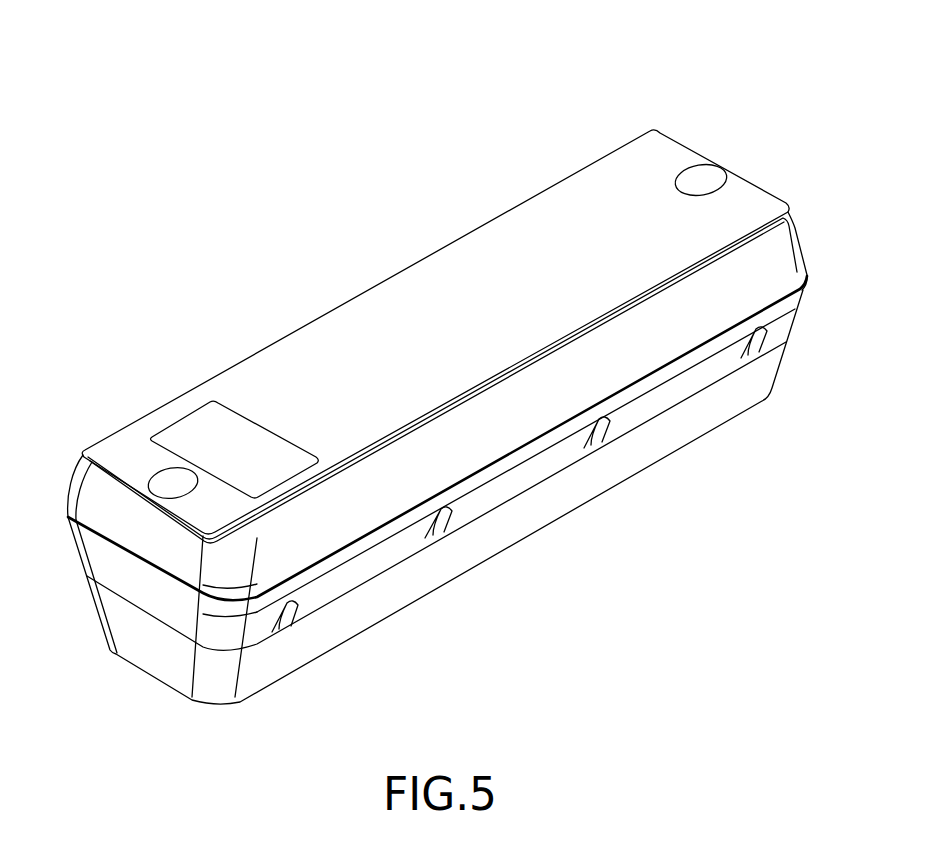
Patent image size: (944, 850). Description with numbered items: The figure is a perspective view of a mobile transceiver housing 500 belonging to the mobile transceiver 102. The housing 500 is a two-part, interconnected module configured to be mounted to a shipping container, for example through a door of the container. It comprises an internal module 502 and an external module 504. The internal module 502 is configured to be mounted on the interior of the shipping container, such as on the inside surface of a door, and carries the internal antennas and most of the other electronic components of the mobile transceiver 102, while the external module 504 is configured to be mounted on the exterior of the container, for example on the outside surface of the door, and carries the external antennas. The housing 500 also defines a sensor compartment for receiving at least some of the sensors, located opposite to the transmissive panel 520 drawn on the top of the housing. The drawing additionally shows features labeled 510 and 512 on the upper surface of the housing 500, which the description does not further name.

The mobile transceiver 102 is at (461, 357).
The mobile transceiver housing 500 is at (441, 369).
The internal module 502 is at (438, 413).
The external module 504 is at (502, 553).
The top surface 510 is at (395, 303).
The openings 512 is at (166, 485).
The transmissive panel 520 is at (188, 432).